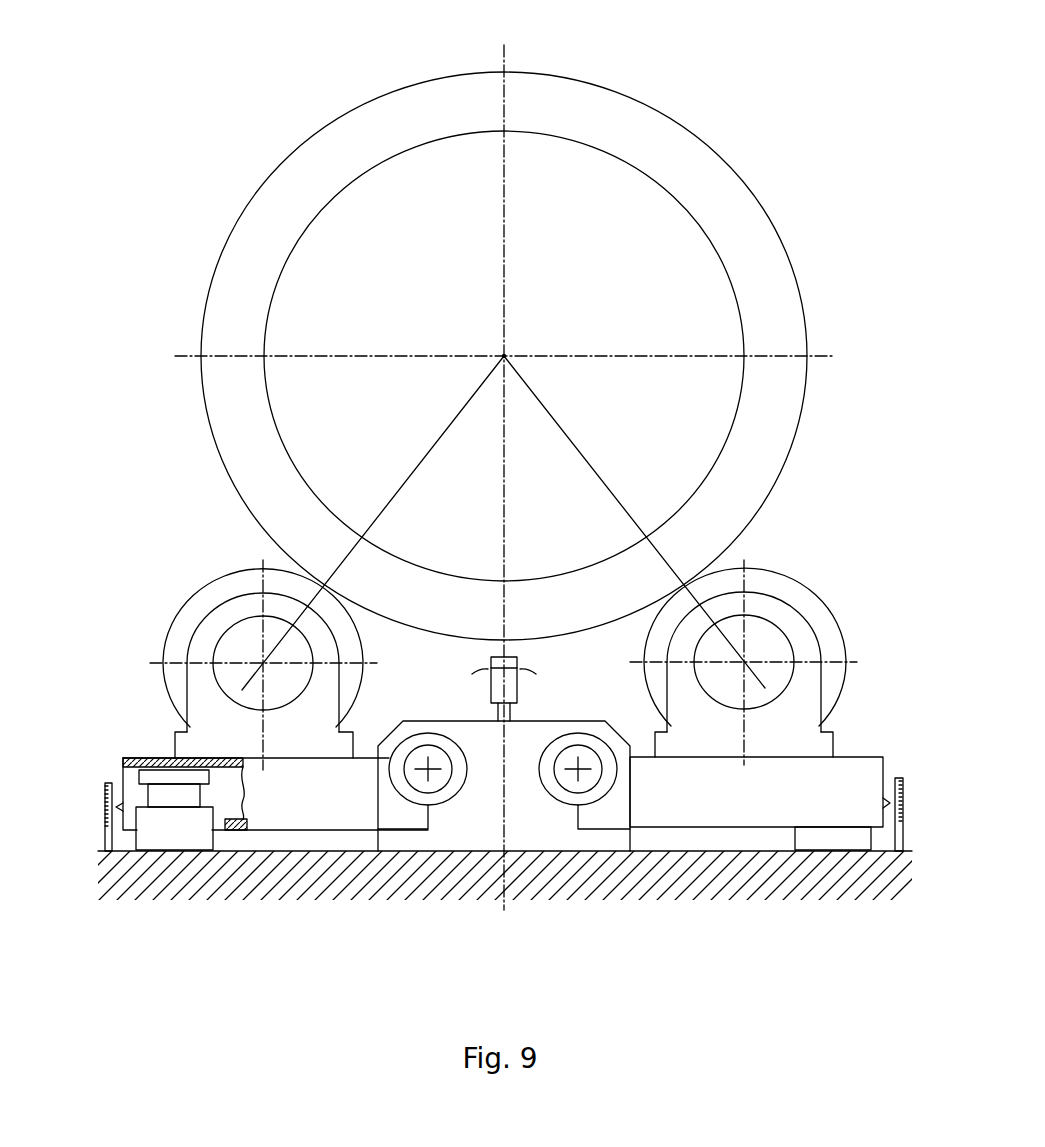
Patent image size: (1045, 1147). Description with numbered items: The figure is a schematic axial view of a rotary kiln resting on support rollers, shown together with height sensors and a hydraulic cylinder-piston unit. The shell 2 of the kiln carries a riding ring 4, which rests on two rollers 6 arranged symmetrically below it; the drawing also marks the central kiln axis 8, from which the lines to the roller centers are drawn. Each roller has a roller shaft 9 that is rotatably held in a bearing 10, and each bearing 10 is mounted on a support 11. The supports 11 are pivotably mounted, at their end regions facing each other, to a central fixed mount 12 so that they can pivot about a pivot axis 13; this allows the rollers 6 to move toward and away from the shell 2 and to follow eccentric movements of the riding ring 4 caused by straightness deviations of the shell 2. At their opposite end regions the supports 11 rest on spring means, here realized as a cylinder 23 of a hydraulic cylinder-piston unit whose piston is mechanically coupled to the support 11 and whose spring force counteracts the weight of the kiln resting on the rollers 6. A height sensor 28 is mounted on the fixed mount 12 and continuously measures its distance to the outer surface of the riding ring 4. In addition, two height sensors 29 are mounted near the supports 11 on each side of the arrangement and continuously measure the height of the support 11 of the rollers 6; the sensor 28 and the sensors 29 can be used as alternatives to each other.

The shell 2 is at (307, 227).
The riding ring 4 is at (317, 133).
The rollers 6 is at (183, 600).
The axis of rotation 8 is at (504, 356).
The roller shafts 9 is at (234, 656).
The bearings 10 is at (202, 747).
The support 11 is at (325, 812).
The fixed mount 12 is at (473, 827).
The pivot axis 13 is at (425, 763).
The cylinder 23 is at (175, 825).
The height sensor 28 is at (507, 685).
The height sensors 29 is at (105, 827).